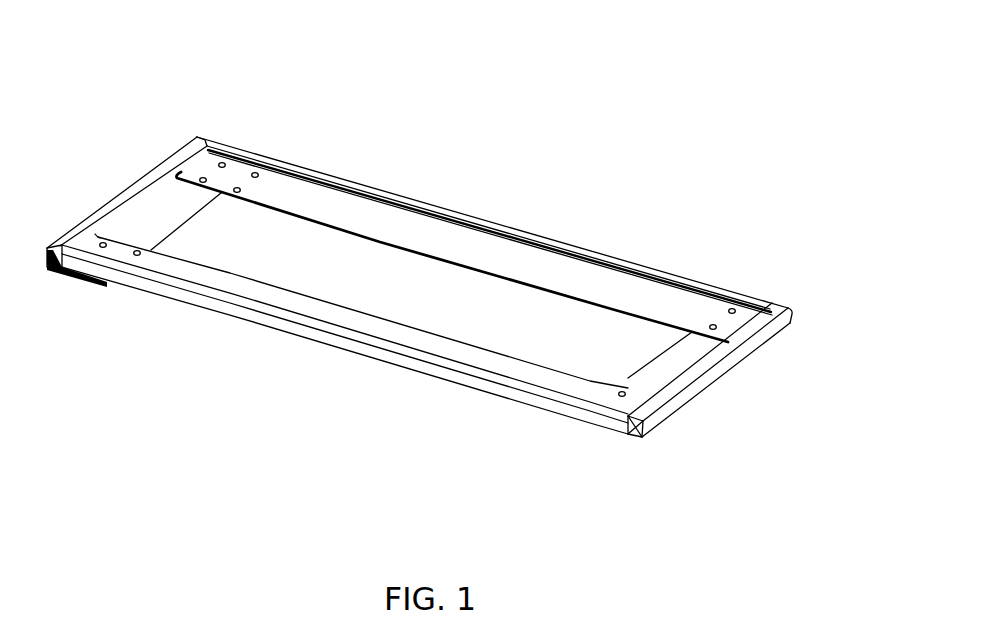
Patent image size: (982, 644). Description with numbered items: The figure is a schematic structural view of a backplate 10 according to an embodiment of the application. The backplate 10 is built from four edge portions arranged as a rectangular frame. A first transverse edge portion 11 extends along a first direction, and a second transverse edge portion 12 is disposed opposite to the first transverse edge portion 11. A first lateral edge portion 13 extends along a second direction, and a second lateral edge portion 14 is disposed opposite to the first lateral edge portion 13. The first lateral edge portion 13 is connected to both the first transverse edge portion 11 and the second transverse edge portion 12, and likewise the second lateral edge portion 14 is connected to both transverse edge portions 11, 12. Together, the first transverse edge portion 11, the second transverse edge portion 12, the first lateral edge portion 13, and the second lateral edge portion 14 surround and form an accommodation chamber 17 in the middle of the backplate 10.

The backplate 10 is at (275, 117).
The first transverse edge portion 11 is at (502, 253).
The second transverse edge portion 12 is at (373, 325).
The first lateral edge portion 13 is at (153, 213).
The second lateral edge portion 14 is at (700, 383).
The accommodation chamber 17 is at (633, 343).